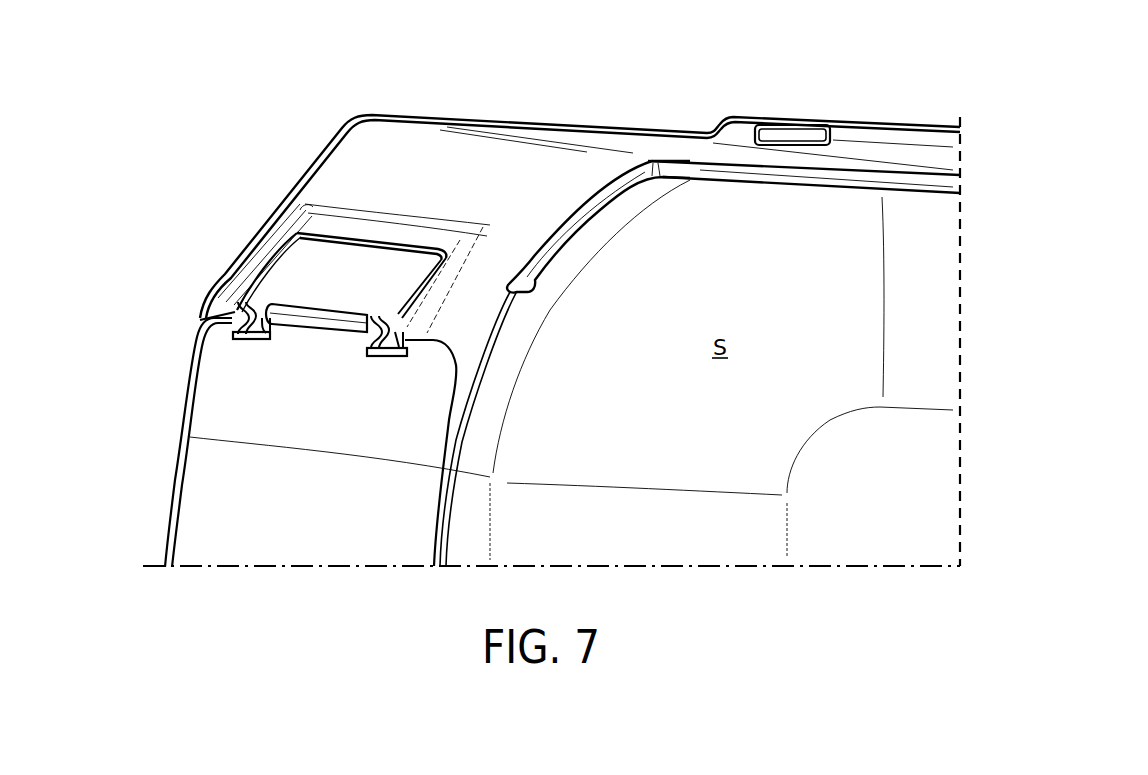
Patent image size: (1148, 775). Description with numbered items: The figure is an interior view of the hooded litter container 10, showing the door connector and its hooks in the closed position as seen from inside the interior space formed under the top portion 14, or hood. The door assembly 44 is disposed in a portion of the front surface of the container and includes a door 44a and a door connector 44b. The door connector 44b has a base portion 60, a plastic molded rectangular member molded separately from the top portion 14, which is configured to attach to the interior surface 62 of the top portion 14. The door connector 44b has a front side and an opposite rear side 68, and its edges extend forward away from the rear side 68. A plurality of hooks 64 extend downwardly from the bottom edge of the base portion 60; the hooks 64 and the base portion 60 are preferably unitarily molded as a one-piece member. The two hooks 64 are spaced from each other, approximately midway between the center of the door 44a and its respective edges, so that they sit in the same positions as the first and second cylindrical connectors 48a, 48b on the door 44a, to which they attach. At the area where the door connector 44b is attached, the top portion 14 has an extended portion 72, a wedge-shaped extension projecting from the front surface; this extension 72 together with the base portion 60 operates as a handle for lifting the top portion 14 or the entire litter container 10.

The litter container 10 is at (746, 75).
The top portion 14 is at (417, 113).
The door assembly 44 is at (100, 297).
The door 44a is at (213, 410).
The door connector 44b is at (203, 273).
The first cylindrical connector 48a is at (237, 327).
The second cylindrical connector 48b is at (370, 333).
The base portion 60 is at (418, 247).
The interior surface 62 is at (323, 228).
The hooks 64 is at (260, 327).
The rear side 68 is at (357, 270).
The extended portion 72 is at (457, 287).